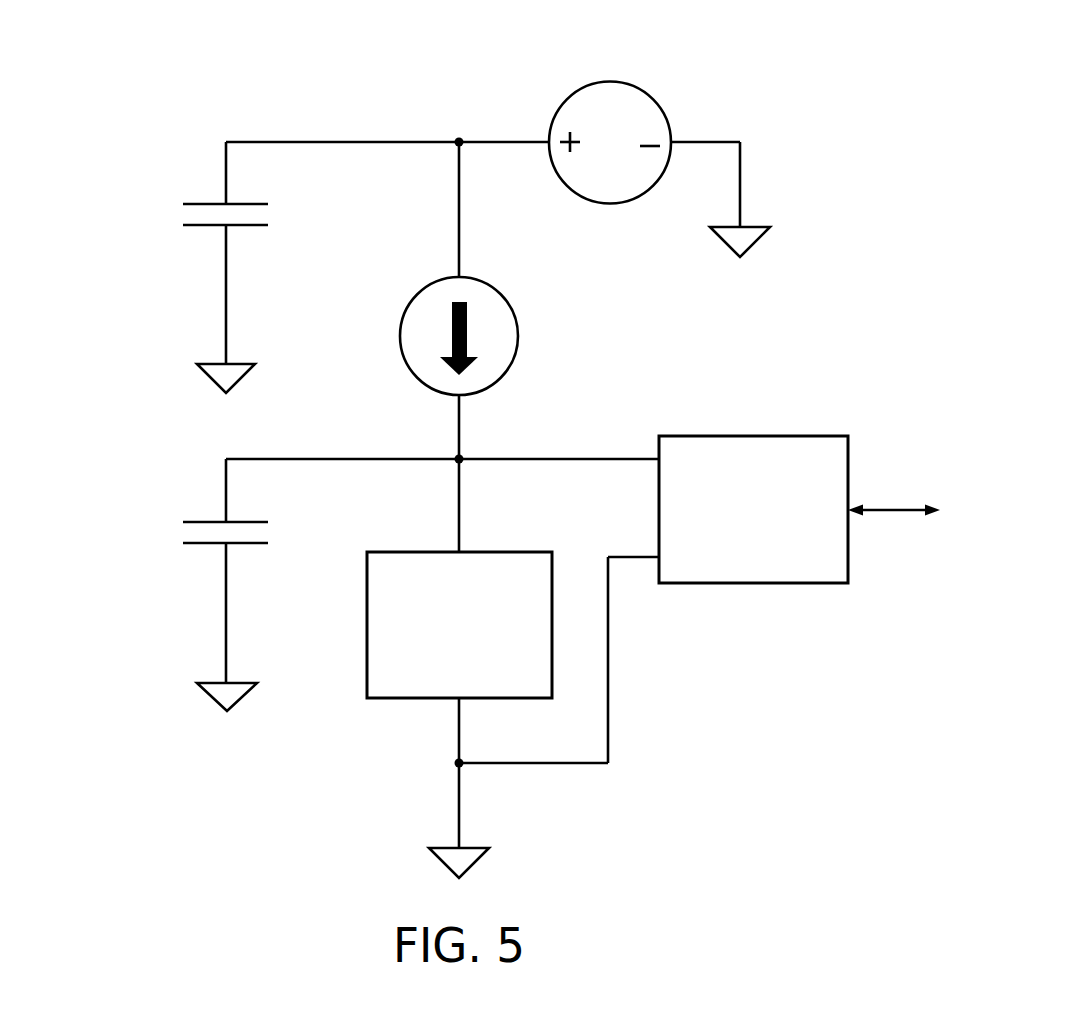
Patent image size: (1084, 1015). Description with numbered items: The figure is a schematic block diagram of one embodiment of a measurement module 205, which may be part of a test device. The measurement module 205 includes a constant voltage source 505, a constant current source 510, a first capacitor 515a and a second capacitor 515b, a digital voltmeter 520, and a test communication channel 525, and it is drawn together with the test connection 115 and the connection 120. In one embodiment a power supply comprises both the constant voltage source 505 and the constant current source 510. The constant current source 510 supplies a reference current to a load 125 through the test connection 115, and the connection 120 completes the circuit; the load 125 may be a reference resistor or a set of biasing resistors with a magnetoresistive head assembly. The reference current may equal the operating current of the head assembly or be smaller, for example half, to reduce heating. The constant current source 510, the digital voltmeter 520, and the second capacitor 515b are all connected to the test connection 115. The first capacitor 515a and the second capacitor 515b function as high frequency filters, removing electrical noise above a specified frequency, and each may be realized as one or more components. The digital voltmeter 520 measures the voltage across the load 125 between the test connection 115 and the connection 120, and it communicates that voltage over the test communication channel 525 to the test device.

The measurement module 205 is at (98, 66).
The constant voltage source 505 is at (565, 99).
The constant current source 510 is at (411, 298).
The first capacitor 515a is at (196, 204).
The second capacitor 515b is at (196, 523).
The test connection 115 is at (458, 528).
The connection 120 is at (458, 805).
The load 125 is at (440, 651).
The digital voltmeter 520 is at (774, 549).
The test communication channel 525 is at (897, 510).